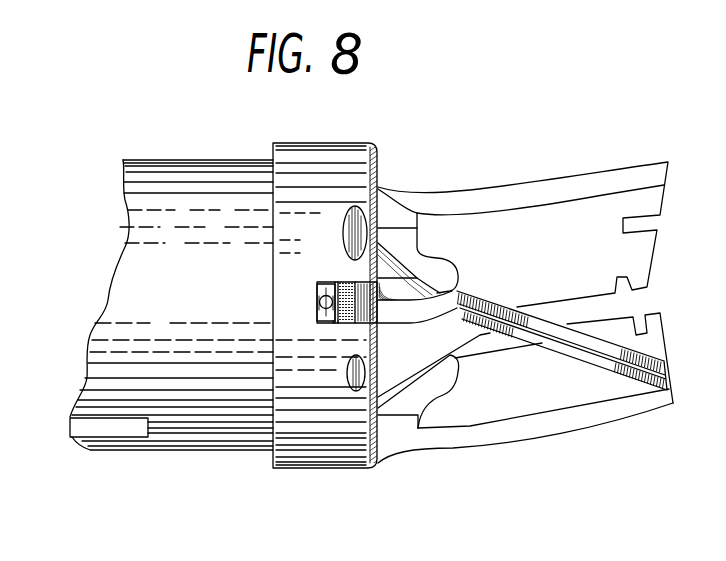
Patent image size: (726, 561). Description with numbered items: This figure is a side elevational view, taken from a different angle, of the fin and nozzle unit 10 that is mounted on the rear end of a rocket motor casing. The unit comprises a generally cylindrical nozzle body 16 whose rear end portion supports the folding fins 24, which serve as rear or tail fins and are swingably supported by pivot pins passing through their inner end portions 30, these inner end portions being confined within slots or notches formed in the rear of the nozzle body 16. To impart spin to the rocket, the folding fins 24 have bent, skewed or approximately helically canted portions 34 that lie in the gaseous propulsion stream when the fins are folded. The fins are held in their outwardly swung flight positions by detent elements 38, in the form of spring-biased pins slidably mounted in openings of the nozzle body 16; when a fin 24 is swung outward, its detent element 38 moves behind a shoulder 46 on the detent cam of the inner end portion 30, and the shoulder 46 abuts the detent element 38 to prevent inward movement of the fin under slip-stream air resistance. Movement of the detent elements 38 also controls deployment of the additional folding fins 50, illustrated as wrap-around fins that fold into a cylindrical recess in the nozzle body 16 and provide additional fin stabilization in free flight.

The fin and nozzle unit 10 is at (600, 143).
The nozzle body 16 is at (310, 142).
The folding fins 24 is at (526, 183).
The inner end portions 30 is at (343, 282).
The bent portions 34 is at (607, 367).
The detent elements 38 is at (320, 318).
The shoulder 46 is at (334, 323).
The additional folding fins 50 is at (183, 175).